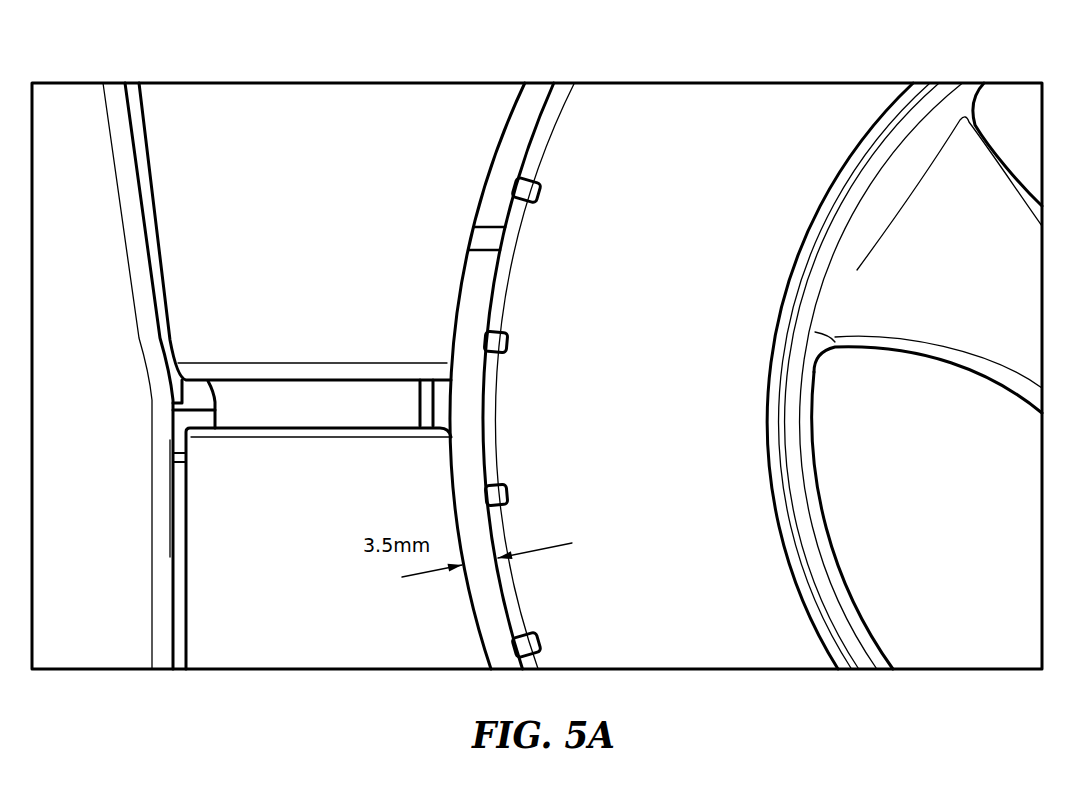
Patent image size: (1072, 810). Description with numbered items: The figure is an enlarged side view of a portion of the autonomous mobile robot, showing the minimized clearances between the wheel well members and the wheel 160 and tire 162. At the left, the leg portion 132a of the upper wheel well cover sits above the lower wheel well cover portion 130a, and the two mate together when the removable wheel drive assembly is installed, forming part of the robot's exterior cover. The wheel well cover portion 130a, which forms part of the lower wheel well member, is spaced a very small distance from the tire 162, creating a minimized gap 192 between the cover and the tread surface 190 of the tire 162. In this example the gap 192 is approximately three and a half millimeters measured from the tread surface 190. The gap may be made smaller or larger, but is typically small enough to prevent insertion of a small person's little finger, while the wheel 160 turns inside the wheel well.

The lower wheel well cover portion 130a is at (300, 639).
The leg portion 132a is at (325, 172).
The wheel 160 is at (980, 270).
The tire 162 is at (718, 172).
The tread surface 190 is at (554, 107).
The gap 192 is at (485, 613).